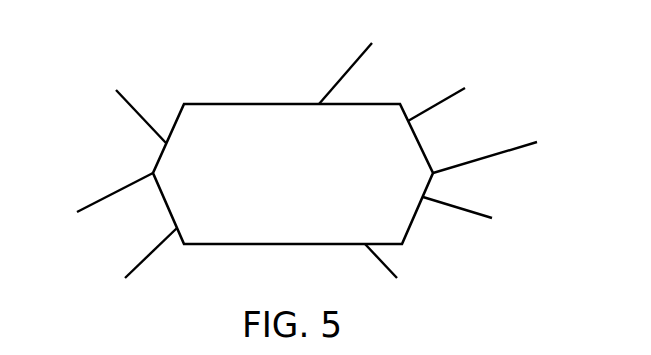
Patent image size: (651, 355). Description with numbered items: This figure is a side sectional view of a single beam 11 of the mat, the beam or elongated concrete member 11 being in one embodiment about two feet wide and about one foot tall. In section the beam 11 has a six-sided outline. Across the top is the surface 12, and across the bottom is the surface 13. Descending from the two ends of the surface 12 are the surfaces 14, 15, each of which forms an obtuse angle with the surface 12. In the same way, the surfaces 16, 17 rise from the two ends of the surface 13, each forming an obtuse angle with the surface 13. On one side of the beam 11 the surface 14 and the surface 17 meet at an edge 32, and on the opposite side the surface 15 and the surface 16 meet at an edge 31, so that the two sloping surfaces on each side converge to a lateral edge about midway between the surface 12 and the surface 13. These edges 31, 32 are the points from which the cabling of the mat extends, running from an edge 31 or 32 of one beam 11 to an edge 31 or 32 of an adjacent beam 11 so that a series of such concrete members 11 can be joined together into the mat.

The beam 11 is at (306, 186).
The surface 12 is at (356, 61).
The surface 13 is at (395, 276).
The surface 14 is at (126, 104).
The surface 15 is at (452, 95).
The surface 16 is at (476, 220).
The surface 17 is at (134, 268).
The edge 31 is at (504, 150).
The edge 32 is at (95, 203).